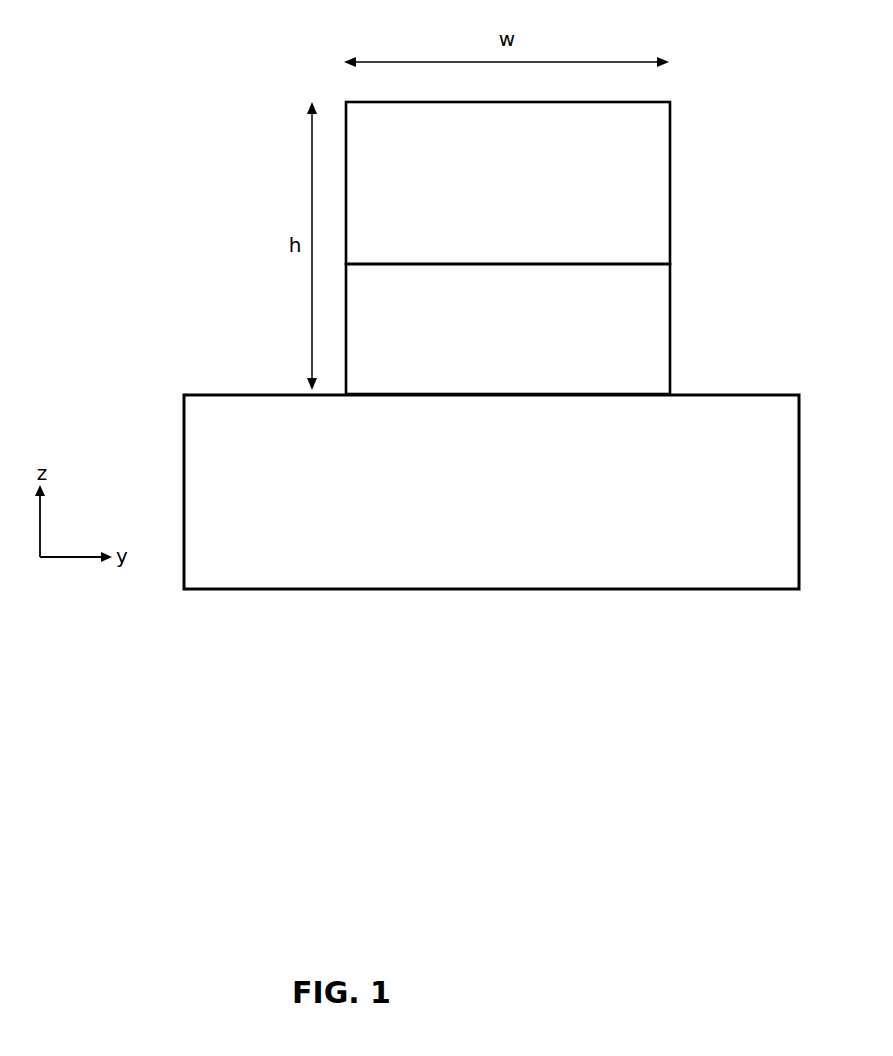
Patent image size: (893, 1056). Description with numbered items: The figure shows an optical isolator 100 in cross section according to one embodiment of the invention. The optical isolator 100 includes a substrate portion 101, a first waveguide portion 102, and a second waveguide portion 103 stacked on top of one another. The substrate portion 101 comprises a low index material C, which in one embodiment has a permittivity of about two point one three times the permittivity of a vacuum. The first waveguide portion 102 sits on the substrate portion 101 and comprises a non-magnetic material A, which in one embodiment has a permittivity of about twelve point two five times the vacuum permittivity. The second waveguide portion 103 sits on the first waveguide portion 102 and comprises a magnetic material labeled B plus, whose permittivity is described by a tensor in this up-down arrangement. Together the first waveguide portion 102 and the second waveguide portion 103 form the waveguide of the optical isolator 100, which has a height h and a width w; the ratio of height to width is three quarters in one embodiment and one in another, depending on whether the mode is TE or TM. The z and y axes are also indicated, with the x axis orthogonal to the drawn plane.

The optical isolator 100 is at (532, 415).
The substrate portion 101 is at (812, 507).
The first waveguide portion 102 is at (682, 329).
The second waveguide portion 103 is at (682, 199).